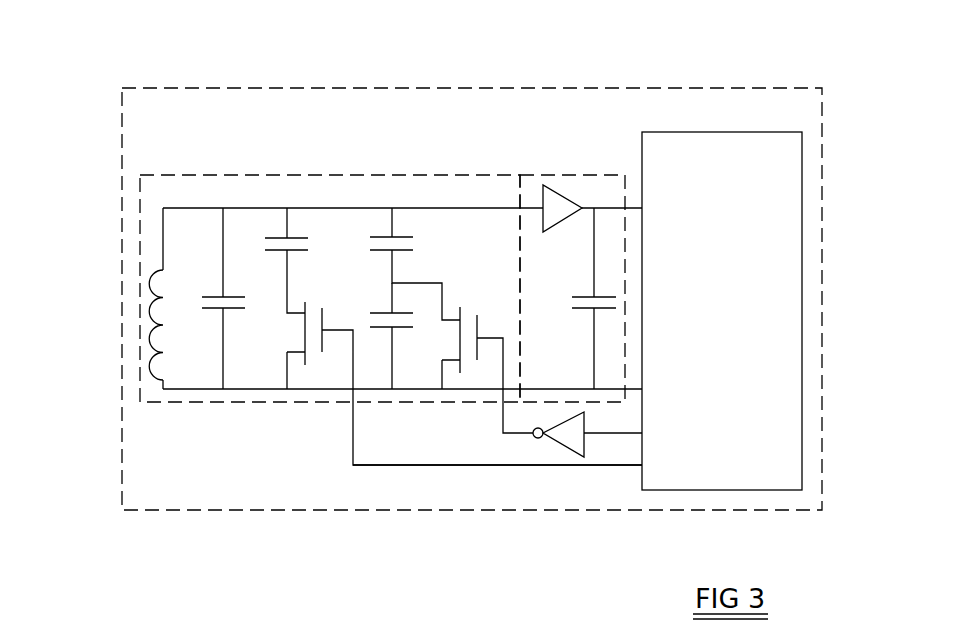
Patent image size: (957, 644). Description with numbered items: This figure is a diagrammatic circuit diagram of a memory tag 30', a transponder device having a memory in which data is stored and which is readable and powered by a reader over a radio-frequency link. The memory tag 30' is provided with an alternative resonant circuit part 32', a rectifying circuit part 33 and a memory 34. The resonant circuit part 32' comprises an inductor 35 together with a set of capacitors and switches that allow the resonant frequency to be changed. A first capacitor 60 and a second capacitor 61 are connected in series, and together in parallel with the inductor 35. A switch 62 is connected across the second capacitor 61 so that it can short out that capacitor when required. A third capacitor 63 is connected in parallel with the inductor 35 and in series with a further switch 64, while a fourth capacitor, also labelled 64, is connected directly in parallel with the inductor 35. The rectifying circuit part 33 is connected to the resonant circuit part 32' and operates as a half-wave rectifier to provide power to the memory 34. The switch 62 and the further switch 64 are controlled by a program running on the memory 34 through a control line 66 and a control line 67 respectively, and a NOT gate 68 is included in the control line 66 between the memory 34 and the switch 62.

The memory tag 30' is at (461, 333).
The alternative resonant circuit part 32' is at (280, 320).
The rectifying circuit part 33 is at (560, 175).
The memory 34 is at (785, 248).
The inductor L2 35 is at (150, 322).
The first capacitor C5 60 is at (382, 233).
The second capacitor C6 61 is at (380, 354).
The switch S4 62 is at (468, 357).
The third capacitor C7 63 is at (277, 233).
The switch S5 and fourth capacitor C8 64 is at (215, 293).
The control line 66 is at (613, 433).
The control line 67 is at (525, 465).
The NOT gate 68 is at (567, 452).